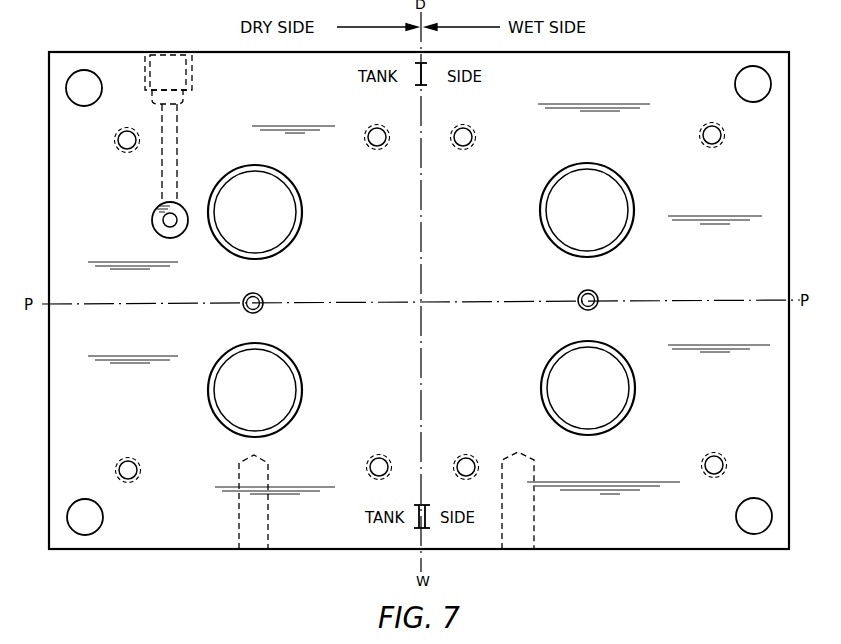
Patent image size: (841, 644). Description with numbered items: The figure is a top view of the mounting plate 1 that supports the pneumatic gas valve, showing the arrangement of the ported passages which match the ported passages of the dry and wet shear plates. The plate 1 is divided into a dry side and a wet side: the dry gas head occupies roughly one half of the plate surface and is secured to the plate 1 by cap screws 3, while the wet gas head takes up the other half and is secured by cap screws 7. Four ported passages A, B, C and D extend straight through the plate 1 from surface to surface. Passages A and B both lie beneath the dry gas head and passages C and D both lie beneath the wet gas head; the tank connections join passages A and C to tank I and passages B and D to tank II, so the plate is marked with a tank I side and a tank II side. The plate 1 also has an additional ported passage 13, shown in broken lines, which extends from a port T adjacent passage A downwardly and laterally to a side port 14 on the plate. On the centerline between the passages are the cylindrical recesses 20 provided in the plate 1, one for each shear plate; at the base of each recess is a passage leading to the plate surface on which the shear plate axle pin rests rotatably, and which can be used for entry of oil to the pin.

The mounting plate 1 is at (58, 478).
The cap screws 3 is at (127, 131).
The cap screws 7 is at (463, 128).
The ported passage 13 is at (172, 165).
The side port 14 is at (174, 78).
The cylindrical recess 20 is at (263, 291).
The ported passage A is at (282, 216).
The ported passage B is at (290, 375).
The ported passage C is at (550, 211).
The ported passage D is at (556, 366).
The port T is at (152, 228).